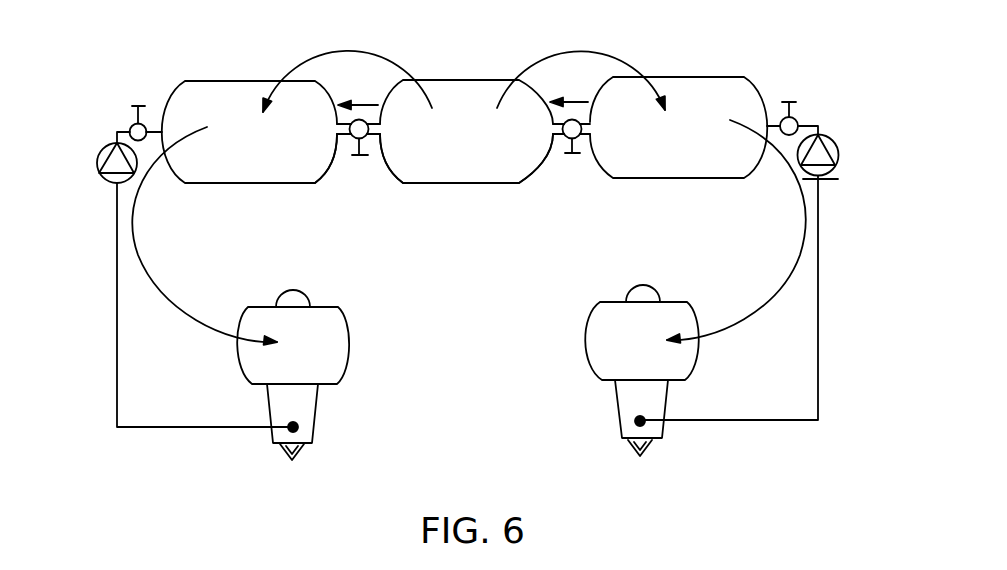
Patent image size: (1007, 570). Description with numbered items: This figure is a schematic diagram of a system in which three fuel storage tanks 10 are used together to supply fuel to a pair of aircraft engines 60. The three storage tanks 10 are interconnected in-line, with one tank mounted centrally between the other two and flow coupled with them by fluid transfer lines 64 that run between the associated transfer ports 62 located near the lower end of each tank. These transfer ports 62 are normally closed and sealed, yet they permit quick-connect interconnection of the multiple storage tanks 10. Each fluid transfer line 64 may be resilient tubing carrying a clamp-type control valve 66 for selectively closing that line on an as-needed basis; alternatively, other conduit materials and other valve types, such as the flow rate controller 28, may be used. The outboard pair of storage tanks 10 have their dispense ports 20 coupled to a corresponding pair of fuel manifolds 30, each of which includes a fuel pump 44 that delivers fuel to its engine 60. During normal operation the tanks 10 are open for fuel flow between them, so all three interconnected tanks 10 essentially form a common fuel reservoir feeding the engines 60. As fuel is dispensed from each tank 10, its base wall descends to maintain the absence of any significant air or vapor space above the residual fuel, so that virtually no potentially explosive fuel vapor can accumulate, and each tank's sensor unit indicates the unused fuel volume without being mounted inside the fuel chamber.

The storage tank 10 is at (225, 95).
The dispense port 20 is at (162, 128).
The flow rate controller 28 is at (131, 125).
The fuel manifold 30 is at (117, 292).
The fuel pump 44 is at (98, 156).
The engine 60 is at (337, 352).
The transfer port 62 is at (335, 143).
The fluid transfer line 64 is at (382, 121).
The control valve 66 is at (571, 120).